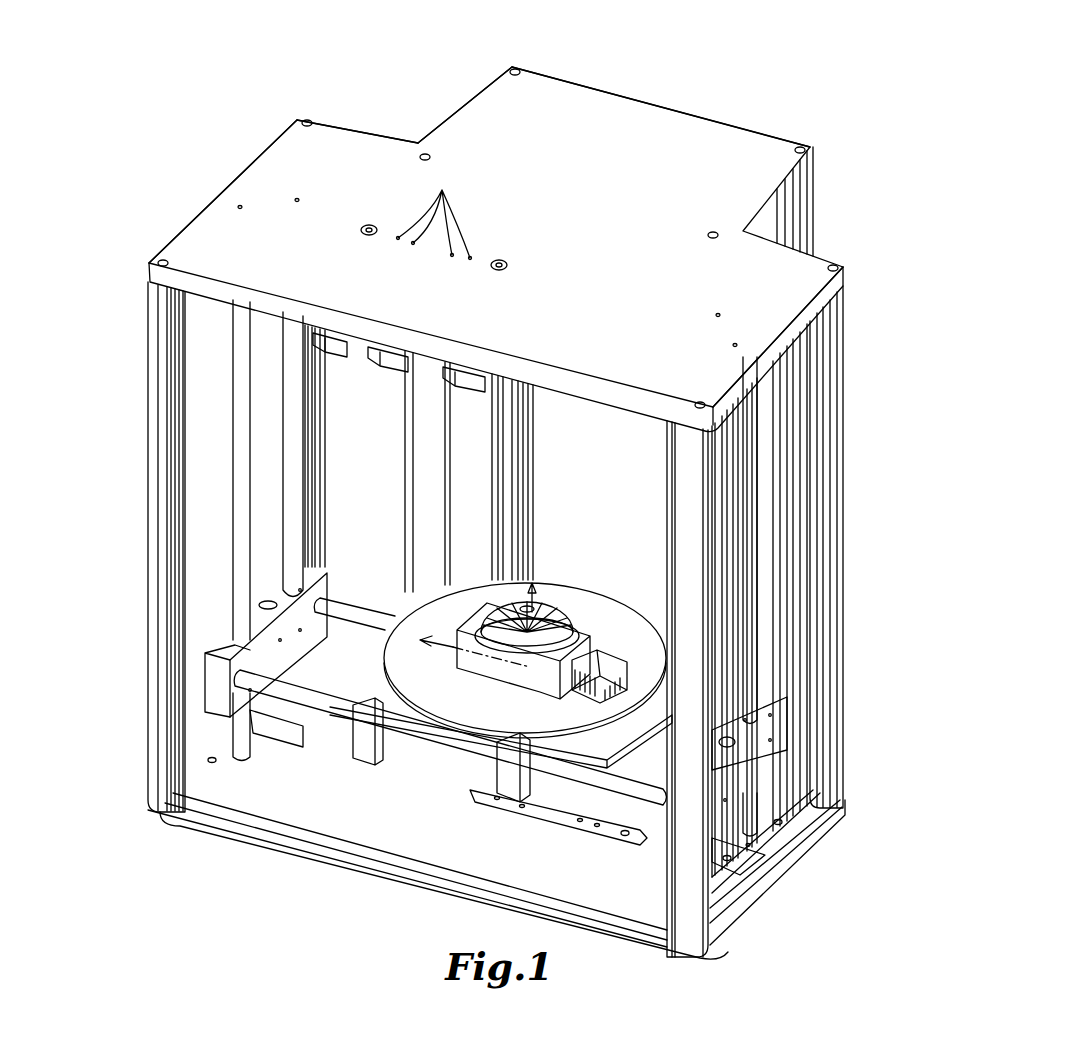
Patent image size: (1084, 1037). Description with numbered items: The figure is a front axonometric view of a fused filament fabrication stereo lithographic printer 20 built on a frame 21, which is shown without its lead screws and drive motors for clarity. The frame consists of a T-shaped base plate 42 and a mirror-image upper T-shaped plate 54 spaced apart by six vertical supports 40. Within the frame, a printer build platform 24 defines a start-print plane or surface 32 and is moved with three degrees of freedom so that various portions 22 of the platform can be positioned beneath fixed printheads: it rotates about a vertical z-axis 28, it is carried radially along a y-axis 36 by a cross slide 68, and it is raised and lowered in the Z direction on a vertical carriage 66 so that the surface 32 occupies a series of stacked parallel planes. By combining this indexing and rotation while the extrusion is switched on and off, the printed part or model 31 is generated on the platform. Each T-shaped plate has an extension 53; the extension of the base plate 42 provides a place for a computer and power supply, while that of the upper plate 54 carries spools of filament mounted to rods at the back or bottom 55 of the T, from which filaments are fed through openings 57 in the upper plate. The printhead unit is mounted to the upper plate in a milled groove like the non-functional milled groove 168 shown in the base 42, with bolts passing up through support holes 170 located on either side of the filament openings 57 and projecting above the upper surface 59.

The fused filament fabrication stereo lithographic printer 20 is at (758, 89).
The frame 21 is at (147, 688).
The portions of the printer build platform 22 is at (633, 669).
The printer build platform 24 is at (443, 720).
The z-axis 28 is at (535, 598).
The printed part or model 31 is at (573, 620).
The start-print plane or surface 32 is at (488, 724).
The y-axis 36 is at (438, 640).
The vertical supports 40 is at (813, 218).
The T-shaped base plate 42 is at (368, 822).
The extension 53 is at (363, 128).
The upper T-shaped plate 54 is at (242, 168).
The back or bottom of the T of the upper T-shaped plate 55 is at (627, 90).
The openings 57 is at (434, 212).
The upper surface 59 is at (578, 207).
The vertical carriage 66 is at (327, 593).
The cross slide 68 is at (377, 670).
The non-functional milled groove 168 is at (560, 817).
The printhead unit support holes 170 is at (369, 224).